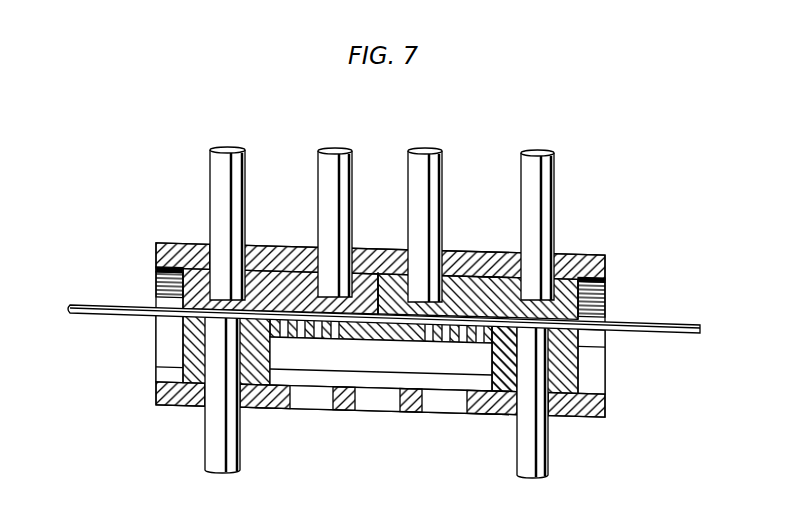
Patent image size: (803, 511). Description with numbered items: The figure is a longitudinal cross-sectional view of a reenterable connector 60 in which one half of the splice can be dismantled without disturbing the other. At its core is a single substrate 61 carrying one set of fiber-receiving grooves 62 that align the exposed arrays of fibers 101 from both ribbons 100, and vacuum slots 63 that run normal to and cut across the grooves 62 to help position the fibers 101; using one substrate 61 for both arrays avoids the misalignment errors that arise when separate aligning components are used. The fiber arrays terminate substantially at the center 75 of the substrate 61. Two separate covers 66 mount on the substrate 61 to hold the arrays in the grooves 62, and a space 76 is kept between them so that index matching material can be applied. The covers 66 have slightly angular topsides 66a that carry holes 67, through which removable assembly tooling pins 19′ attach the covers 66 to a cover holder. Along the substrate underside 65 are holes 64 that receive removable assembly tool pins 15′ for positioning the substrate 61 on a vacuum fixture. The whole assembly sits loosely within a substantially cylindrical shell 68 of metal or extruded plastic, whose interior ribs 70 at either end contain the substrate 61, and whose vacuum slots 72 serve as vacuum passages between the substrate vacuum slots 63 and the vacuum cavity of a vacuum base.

The reenterable connector 60 is at (392, 503).
The covers 66 is at (572, 257).
The topsides 66a is at (193, 267).
The holes 67 is at (300, 290).
The space 76 is at (379, 272).
The center 75 is at (372, 277).
The fibers 101 is at (488, 273).
The interior ribs 70 is at (158, 274).
The substrate 61 is at (583, 345).
The fiber-receiving grooves 62 is at (437, 340).
The vacuum slots 63 is at (283, 340).
The holes 64 is at (257, 406).
The substrate underside 65 is at (497, 417).
The shell 68 is at (170, 252).
The vacuum slots 72 is at (305, 400).
The assembly tooling pins 19′ is at (213, 163).
The assembly tool pins 15′ is at (238, 460).
The ribbons 100 is at (95, 305).